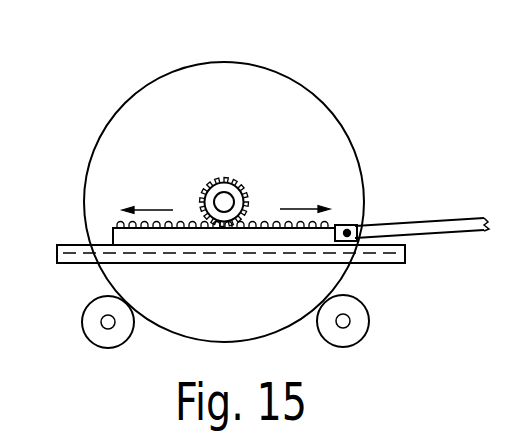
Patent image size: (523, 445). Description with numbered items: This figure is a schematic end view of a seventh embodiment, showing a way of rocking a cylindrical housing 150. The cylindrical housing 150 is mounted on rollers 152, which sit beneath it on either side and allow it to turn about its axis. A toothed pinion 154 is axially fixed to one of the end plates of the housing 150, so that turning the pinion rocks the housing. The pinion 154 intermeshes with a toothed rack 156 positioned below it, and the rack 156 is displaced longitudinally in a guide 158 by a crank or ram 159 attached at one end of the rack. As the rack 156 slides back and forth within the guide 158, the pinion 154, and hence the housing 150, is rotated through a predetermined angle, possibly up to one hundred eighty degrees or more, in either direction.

The cylindrical housing 150 is at (133, 103).
The rollers 152 is at (108, 336).
The toothed pinion 154 is at (228, 176).
The toothed rack 156 is at (259, 230).
The guide 158 is at (221, 264).
The crank or ram 159 is at (422, 222).